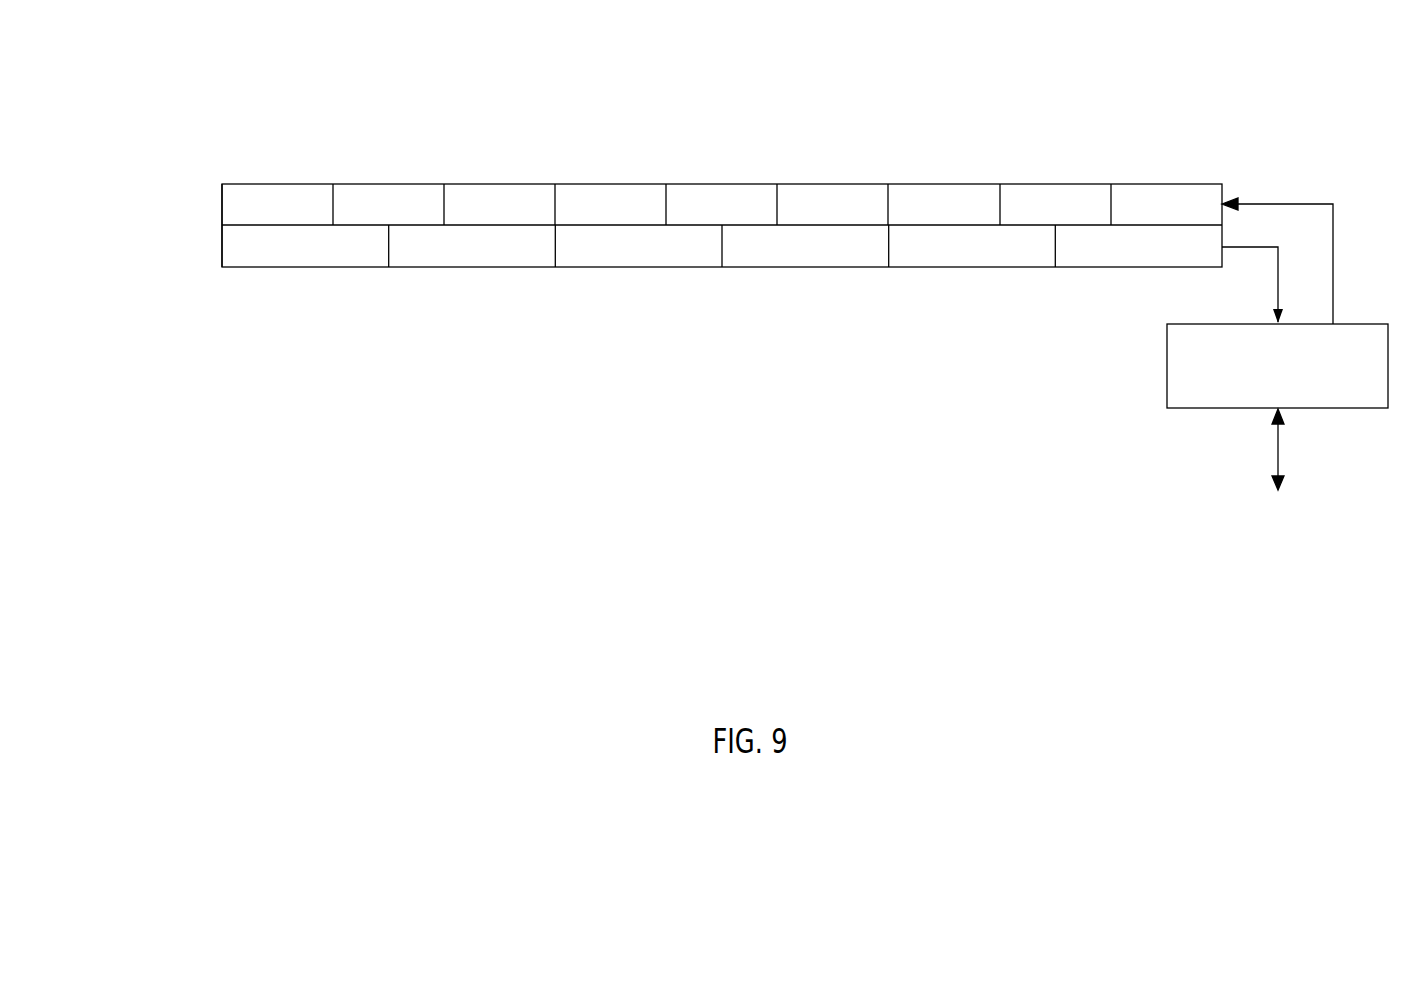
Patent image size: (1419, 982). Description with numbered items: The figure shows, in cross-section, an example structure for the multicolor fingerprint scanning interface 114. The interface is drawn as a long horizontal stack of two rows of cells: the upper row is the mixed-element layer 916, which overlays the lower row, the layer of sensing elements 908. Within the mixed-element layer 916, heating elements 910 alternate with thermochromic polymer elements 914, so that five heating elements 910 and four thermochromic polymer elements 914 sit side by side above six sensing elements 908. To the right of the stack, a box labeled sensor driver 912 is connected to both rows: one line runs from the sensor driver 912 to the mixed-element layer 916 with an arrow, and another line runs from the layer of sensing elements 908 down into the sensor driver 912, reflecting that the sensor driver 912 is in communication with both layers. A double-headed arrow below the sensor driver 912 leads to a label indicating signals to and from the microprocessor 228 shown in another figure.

The multicolor fingerprint scanning interface 114 is at (522, 98).
The mixed-element layer 916 is at (195, 203).
The heating elements 910 is at (296, 216).
The thermochromic polymer elements 914 is at (407, 216).
The layer of sensing elements 908 is at (324, 257).
The sensor driver 912 is at (1297, 396).
The microprocessor 228 is at (1278, 542).